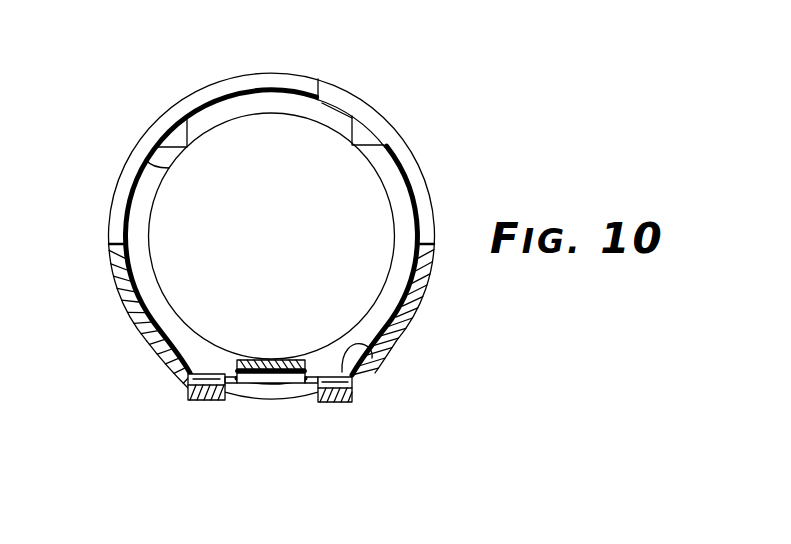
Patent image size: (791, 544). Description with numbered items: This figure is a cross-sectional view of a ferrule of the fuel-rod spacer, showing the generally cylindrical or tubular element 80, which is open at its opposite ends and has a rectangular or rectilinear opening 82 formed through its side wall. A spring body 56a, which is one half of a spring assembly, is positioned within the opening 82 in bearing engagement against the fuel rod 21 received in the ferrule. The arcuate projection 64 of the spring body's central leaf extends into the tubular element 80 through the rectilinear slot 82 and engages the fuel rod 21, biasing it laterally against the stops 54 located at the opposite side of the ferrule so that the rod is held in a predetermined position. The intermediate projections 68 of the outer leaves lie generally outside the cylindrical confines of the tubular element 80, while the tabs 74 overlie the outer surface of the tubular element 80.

The fuel rod 21 is at (145, 160).
The stops 54 is at (318, 79).
The spring body 56a is at (374, 376).
The arcuate projection 64 is at (270, 361).
The intermediate portions 68 is at (331, 403).
The tabs 74 is at (166, 367).
The cylindrical element 80 is at (419, 174).
The opening 82 is at (378, 353).